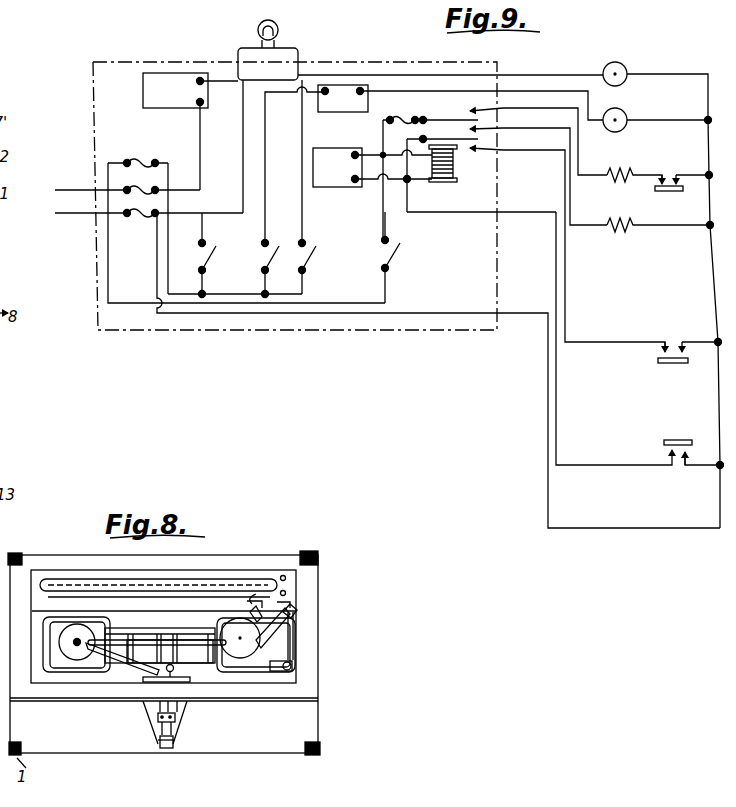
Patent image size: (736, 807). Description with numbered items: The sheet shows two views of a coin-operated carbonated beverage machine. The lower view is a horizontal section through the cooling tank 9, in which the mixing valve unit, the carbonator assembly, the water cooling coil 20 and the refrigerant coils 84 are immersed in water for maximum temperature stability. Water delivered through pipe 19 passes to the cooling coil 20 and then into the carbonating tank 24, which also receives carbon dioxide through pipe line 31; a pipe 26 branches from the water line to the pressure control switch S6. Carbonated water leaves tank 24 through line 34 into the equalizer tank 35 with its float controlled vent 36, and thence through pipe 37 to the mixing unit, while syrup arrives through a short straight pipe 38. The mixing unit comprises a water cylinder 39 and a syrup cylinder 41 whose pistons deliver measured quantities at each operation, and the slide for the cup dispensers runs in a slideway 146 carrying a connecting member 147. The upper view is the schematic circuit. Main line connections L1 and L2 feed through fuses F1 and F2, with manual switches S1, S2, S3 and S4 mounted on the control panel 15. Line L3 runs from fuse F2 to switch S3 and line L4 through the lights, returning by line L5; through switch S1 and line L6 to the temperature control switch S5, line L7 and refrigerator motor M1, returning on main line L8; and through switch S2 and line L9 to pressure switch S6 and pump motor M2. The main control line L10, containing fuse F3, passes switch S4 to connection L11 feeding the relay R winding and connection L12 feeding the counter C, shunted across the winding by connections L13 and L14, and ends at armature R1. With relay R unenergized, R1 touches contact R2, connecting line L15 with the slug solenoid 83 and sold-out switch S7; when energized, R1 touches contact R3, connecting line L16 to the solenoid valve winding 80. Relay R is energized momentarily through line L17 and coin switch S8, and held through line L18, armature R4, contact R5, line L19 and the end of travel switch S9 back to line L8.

In FIG. 9, the control panel 15 is at (401, 333).
In FIG. 9, the line L7 is at (532, 75).
In FIG. 9, the temperature control switch S5 is at (190, 90).
In FIG. 9, the line L6 is at (200, 193).
In FIG. 9, the line L5 is at (243, 150).
In FIG. 9, the fuse F3 is at (145, 160).
In FIG. 9, the fuse F2 is at (154, 192).
In FIG. 9, the fuse F1 is at (141, 219).
In FIG. 9, the main line connection L2 is at (80, 178).
In FIG. 9, the main line connection L1 is at (80, 226).
In FIG. 9, the main control circuit line L10 is at (112, 288).
In FIG. 9, the line L3 is at (168, 260).
In FIG. 9, the manually operated switch S1 is at (210, 258).
In FIG. 9, the manually operated switch S2 is at (272, 258).
In FIG. 9, the line L4 is at (283, 175).
In FIG. 9, the line L9 is at (265, 218).
In FIG. 9, the manually operated switch S3 is at (310, 258).
In FIG. 9, the manually operated switch S4 is at (393, 256).
In FIG. 9, the pressure control switch S6 is at (343, 99).
In FIG. 9, the line L15 is at (548, 100).
In FIG. 9, the refrigerator motor M1 is at (626, 58).
In FIG. 9, the pump motor M2 is at (627, 108).
In FIG. 9, the main line L8 is at (702, 98).
In FIG. 9, the coin switch S8 is at (677, 438).
In FIG. 9, the line L17 is at (476, 213).
In FIG. 9, the counter C is at (337, 167).
In FIG. 9, the connection L12 is at (368, 144).
In FIG. 9, the connection L13 is at (376, 182).
In FIG. 9, the connection L11 is at (391, 152).
In FIG. 9, the line L18 is at (401, 182).
In FIG. 9, the connection L14 is at (418, 180).
In FIG. 9, the relay R is at (457, 165).
In FIG. 9, the armature connection R1 is at (456, 119).
In FIG. 9, the relay armature R4 is at (442, 133).
In FIG. 9, the stationary contact R2 is at (538, 139).
In FIG. 9, the stationary contact R3 is at (538, 167).
In FIG. 9, the stationary contact R5 is at (567, 240).
In FIG. 9, the slug solenoid 83 is at (623, 172).
In FIG. 9, the sold-out switch S7 is at (671, 192).
In FIG. 9, the solenoid winding 80 is at (623, 222).
In FIG. 9, the line L16 is at (584, 228).
In FIG. 9, the line L19 is at (569, 308).
In FIG. 9, the end of travel switch S9 is at (678, 363).
In FIG. 8, the tank 9 is at (294, 697).
In FIG. 8, the line 34 is at (103, 640).
In FIG. 8, the coils 84 is at (279, 580).
In FIG. 8, the pipe line 31 is at (228, 580).
In FIG. 8, the equalizer tank 35 is at (75, 656).
In FIG. 8, the float controlled vent 36 is at (86, 660).
In FIG. 8, the water cylinder 39 is at (145, 653).
In FIG. 8, the pipe 37 is at (123, 668).
In FIG. 8, the syrup cylinder 41 is at (192, 653).
In FIG. 8, the short straight pipe 38 is at (166, 684).
In FIG. 8, the cooling coil 20 is at (252, 624).
In FIG. 8, the carbonating tank 24 is at (262, 618).
In FIG. 8, the pipe 26 is at (296, 634).
In FIG. 8, the pipe 19 is at (292, 667).
In FIG. 8, the slideway 146 is at (181, 716).
In FIG. 8, the connecting member 147 is at (160, 742).